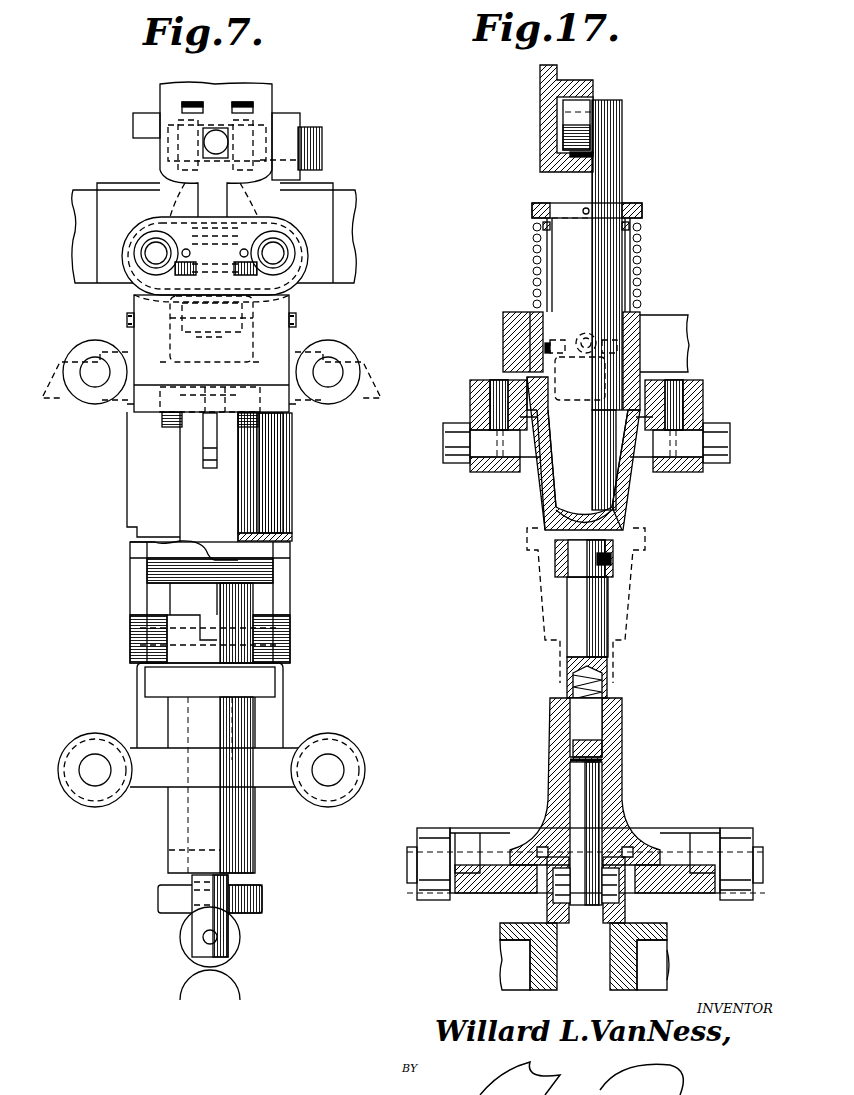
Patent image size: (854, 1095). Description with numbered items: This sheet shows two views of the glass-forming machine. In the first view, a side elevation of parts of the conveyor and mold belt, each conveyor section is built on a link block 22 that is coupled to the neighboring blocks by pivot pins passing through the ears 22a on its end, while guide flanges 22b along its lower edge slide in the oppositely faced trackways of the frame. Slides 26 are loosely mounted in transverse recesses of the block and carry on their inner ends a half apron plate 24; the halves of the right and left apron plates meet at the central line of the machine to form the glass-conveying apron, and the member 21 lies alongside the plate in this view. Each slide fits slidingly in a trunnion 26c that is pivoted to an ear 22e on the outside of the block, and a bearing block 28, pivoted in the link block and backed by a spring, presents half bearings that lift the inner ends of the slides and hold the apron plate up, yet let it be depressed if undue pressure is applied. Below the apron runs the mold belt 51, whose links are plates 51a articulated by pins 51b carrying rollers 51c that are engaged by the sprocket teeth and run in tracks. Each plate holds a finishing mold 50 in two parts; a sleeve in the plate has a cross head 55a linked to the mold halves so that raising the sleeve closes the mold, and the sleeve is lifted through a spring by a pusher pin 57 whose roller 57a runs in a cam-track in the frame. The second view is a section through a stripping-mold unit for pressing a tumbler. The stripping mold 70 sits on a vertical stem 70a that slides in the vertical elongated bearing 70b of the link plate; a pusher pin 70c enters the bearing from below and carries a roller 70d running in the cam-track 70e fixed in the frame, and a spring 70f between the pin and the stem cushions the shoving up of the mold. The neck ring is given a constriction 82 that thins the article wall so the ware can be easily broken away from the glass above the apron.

In FIG. 7, the cross bar 21 is at (110, 235).
In FIG. 7, the link block 22 is at (277, 348).
In FIG. 7, the ears 22a is at (424, 347).
In FIG. 7, the guide flanges 22b is at (143, 400).
In FIG. 7, the ear 22e is at (217, 238).
In FIG. 7, the apron plate 24 is at (325, 237).
In FIG. 7, the slides 26 is at (275, 243).
In FIG. 7, the trunnions 26c is at (420, 258).
In FIG. 7, the bearing block 28 is at (300, 299).
In FIG. 7, the finishing molds 50 is at (145, 493).
In FIG. 7, the mold belt 51 is at (200, 713).
In FIG. 7, the plate 51a is at (200, 775).
In FIG. 7, the pins 51b is at (415, 740).
In FIG. 7, the rollers 51c is at (328, 740).
In FIG. 7, the cross head 55a is at (200, 602).
In FIG. 7, the pusher pin 57 is at (200, 897).
In FIG. 7, the roller 57a is at (183, 950).
In FIG. 17, the stripping mold 70 is at (628, 502).
In FIG. 17, the vertical stem 70a is at (605, 618).
In FIG. 17, the vertical elongated bearing 70b is at (620, 763).
In FIG. 17, the pusher pin 70c is at (583, 803).
In FIG. 17, the roller 70d is at (557, 890).
In FIG. 17, the cam-track 70e is at (620, 892).
In FIG. 17, the spring 70f is at (607, 697).
In FIG. 17, the constriction 82 is at (667, 407).